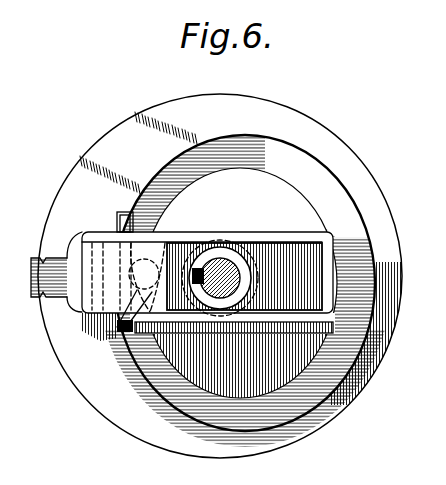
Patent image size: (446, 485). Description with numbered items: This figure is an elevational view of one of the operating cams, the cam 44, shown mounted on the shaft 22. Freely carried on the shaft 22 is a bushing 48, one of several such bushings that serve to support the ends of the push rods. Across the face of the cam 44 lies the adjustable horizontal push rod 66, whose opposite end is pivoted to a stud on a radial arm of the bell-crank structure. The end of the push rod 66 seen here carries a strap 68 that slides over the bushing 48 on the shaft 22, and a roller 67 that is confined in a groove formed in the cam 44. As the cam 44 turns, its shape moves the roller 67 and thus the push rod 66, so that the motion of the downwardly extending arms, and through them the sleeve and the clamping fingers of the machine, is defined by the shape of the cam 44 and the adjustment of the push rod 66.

The cam 44 is at (289, 109).
The push rod 66 is at (57, 262).
The strap 68 is at (188, 235).
The shaft 22 is at (255, 243).
The bushing 48 is at (226, 249).
The roller 67 is at (120, 334).